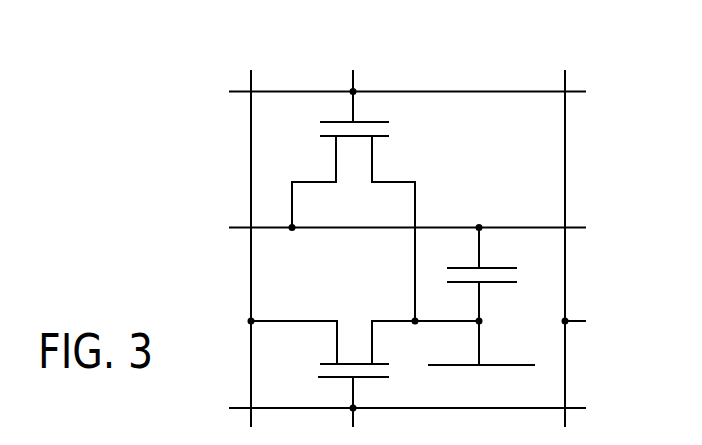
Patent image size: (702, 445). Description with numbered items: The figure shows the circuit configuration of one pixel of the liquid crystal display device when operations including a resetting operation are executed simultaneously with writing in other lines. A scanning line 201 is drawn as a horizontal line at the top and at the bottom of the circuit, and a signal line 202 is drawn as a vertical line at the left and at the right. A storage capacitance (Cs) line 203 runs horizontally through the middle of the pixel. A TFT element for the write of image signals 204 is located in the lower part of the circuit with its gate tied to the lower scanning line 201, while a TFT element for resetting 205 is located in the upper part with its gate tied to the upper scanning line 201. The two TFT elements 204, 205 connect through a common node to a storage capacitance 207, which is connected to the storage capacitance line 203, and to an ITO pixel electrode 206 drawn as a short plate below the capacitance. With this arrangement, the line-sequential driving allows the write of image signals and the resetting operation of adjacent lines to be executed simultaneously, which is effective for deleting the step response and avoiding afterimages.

The scanning line 201 is at (332, 92).
The signal line 202 is at (252, 89).
The storage capacitance (Cs) line 203 is at (495, 227).
The TFT element for the write of image signals 204 is at (333, 364).
The TFT element for resetting 205 is at (330, 122).
The ITO pixel electrode 206 is at (497, 365).
The storage capacitance 207 is at (500, 268).